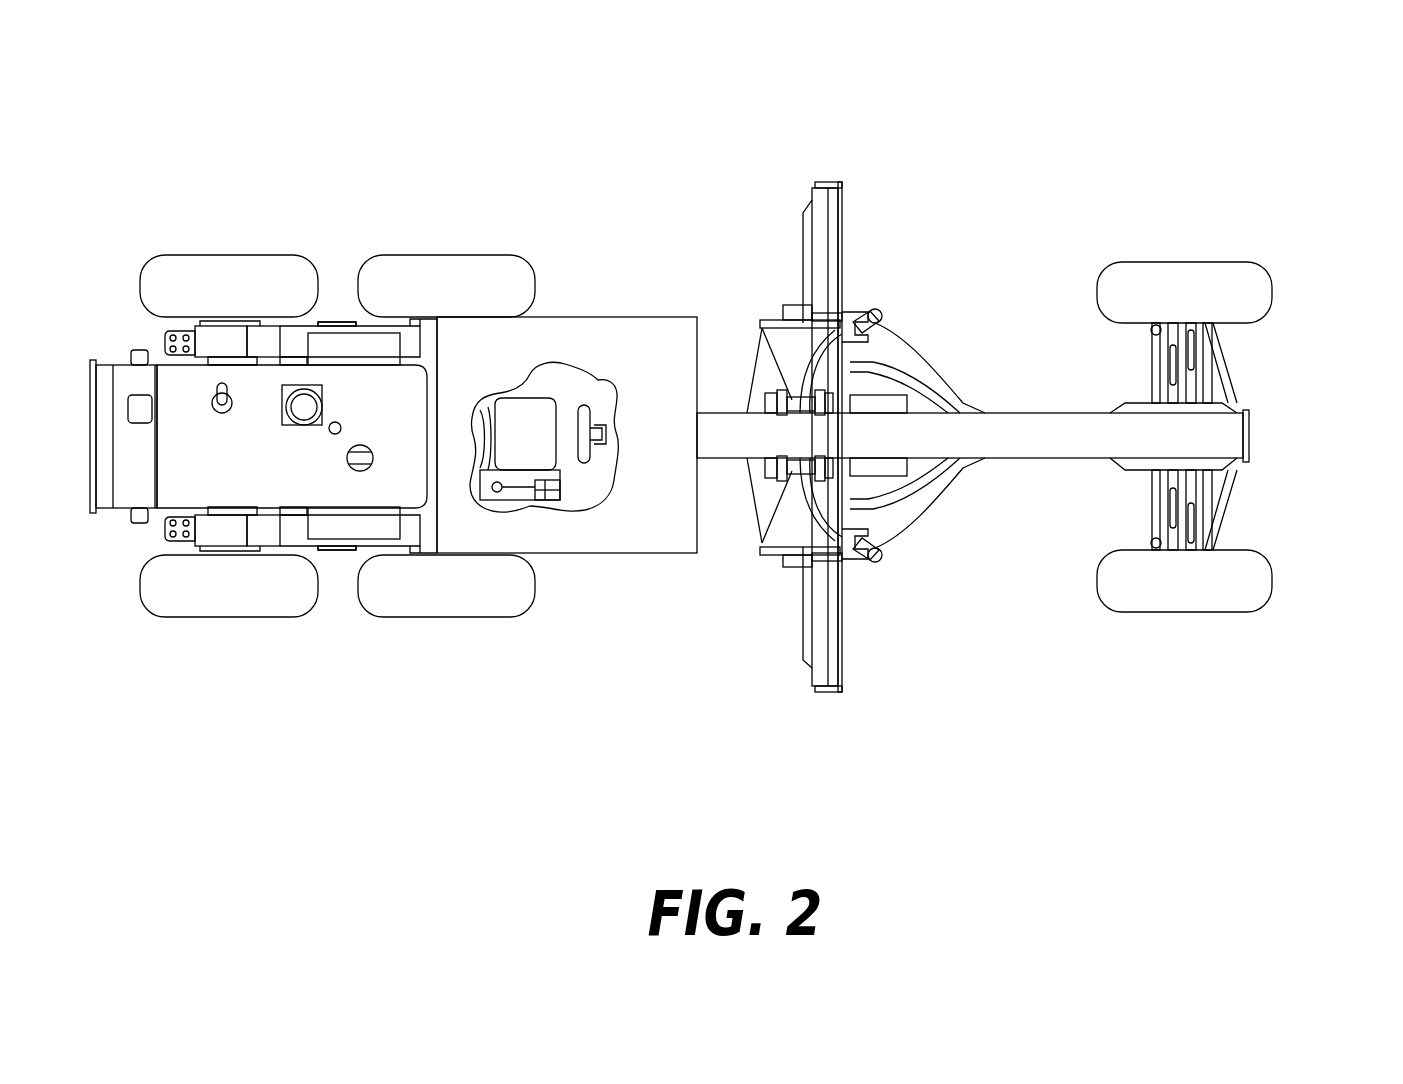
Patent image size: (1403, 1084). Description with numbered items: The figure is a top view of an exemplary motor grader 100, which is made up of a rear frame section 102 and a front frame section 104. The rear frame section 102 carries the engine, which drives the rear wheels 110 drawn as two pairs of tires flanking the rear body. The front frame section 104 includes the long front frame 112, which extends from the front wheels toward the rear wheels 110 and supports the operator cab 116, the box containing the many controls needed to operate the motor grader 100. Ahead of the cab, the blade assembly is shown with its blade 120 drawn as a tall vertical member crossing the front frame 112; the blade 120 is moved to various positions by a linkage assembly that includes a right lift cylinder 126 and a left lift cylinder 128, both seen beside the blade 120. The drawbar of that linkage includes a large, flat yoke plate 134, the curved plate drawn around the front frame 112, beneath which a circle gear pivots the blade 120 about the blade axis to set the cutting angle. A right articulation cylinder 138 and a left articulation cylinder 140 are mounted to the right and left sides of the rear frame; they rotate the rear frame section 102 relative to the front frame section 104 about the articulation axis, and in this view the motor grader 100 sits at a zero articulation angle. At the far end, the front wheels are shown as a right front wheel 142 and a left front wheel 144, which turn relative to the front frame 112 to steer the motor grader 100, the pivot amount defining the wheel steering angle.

The motor grader 100 is at (1027, 184).
The rear frame section 102 is at (102, 688).
The front frame section 104 is at (472, 688).
The rear wheels 110 is at (212, 618).
The front frame 112 is at (1027, 425).
The operator cab 116 is at (562, 322).
The blade 120 is at (843, 657).
The right lift cylinder 126 is at (878, 563).
The left lift cylinder 128 is at (873, 318).
The yoke plate 134 is at (925, 522).
The right articulation cylinder 138 is at (335, 556).
The left articulation cylinder 140 is at (342, 318).
The right front wheel 142 is at (1272, 570).
The left front wheel 144 is at (1272, 283).